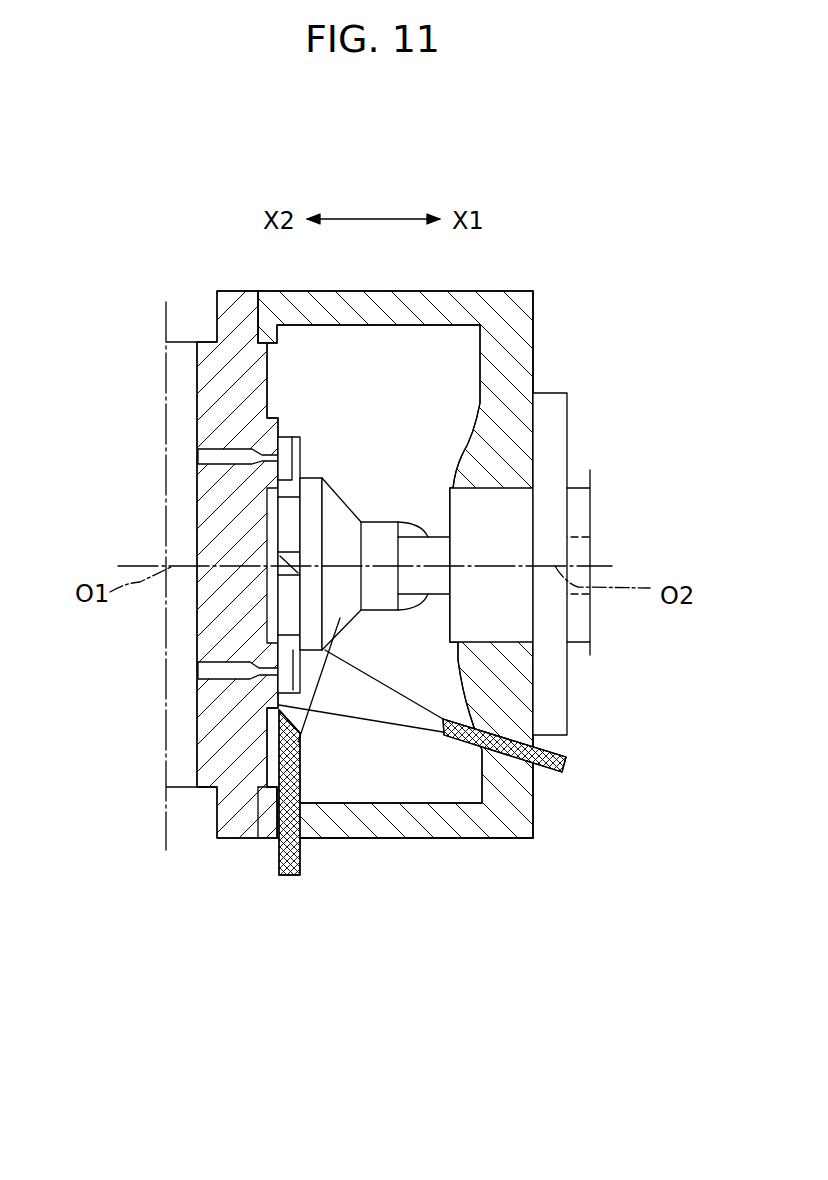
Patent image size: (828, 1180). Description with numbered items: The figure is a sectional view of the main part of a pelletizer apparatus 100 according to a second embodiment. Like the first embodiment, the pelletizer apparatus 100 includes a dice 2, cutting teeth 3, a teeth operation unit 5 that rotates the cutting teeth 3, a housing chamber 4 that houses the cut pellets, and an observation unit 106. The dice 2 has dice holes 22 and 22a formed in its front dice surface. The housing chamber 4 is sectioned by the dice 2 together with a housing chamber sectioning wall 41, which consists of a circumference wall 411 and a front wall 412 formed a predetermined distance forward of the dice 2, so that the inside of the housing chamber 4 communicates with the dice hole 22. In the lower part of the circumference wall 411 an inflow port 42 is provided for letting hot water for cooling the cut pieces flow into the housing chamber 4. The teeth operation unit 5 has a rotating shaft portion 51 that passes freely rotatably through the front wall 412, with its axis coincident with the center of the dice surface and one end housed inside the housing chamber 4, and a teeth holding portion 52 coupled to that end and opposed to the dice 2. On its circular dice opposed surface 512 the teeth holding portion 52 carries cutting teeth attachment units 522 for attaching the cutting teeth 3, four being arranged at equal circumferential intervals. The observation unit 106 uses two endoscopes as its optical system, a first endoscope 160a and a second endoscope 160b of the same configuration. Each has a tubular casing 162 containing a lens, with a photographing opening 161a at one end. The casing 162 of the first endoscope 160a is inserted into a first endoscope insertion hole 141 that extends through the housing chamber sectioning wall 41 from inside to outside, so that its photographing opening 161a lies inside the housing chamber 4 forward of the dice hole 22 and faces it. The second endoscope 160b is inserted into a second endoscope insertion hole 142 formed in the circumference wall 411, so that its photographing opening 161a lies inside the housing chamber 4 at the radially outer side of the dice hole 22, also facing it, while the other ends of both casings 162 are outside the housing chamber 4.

The dice 2 is at (231, 290).
The cutting teeth 3 is at (300, 438).
The housing chamber 4 is at (460, 368).
The teeth operation unit 5 is at (647, 377).
The dice hole 22 is at (268, 453).
The dice hole 22a is at (262, 712).
The housing chamber sectioning wall 41 is at (637, 787).
The inflow port 42 is at (400, 606).
The rotating shaft portion 51 is at (435, 535).
The teeth holding portion 52 is at (344, 488).
The pelletizer apparatus 100 is at (553, 273).
The observation unit 106 is at (455, 955).
The first endoscope insertion hole 141 is at (568, 717).
The second endoscope insertion hole 142 is at (280, 845).
The first endoscope 160a is at (515, 777).
The second endoscope 160b is at (300, 848).
The photographing opening 161a is at (272, 711).
The casing 162 is at (281, 857).
The circumference wall 411 is at (482, 838).
The front wall 412 is at (534, 806).
The dice opposed surface 512 is at (298, 598).
The cutting teeth attachment unit 522 is at (322, 477).